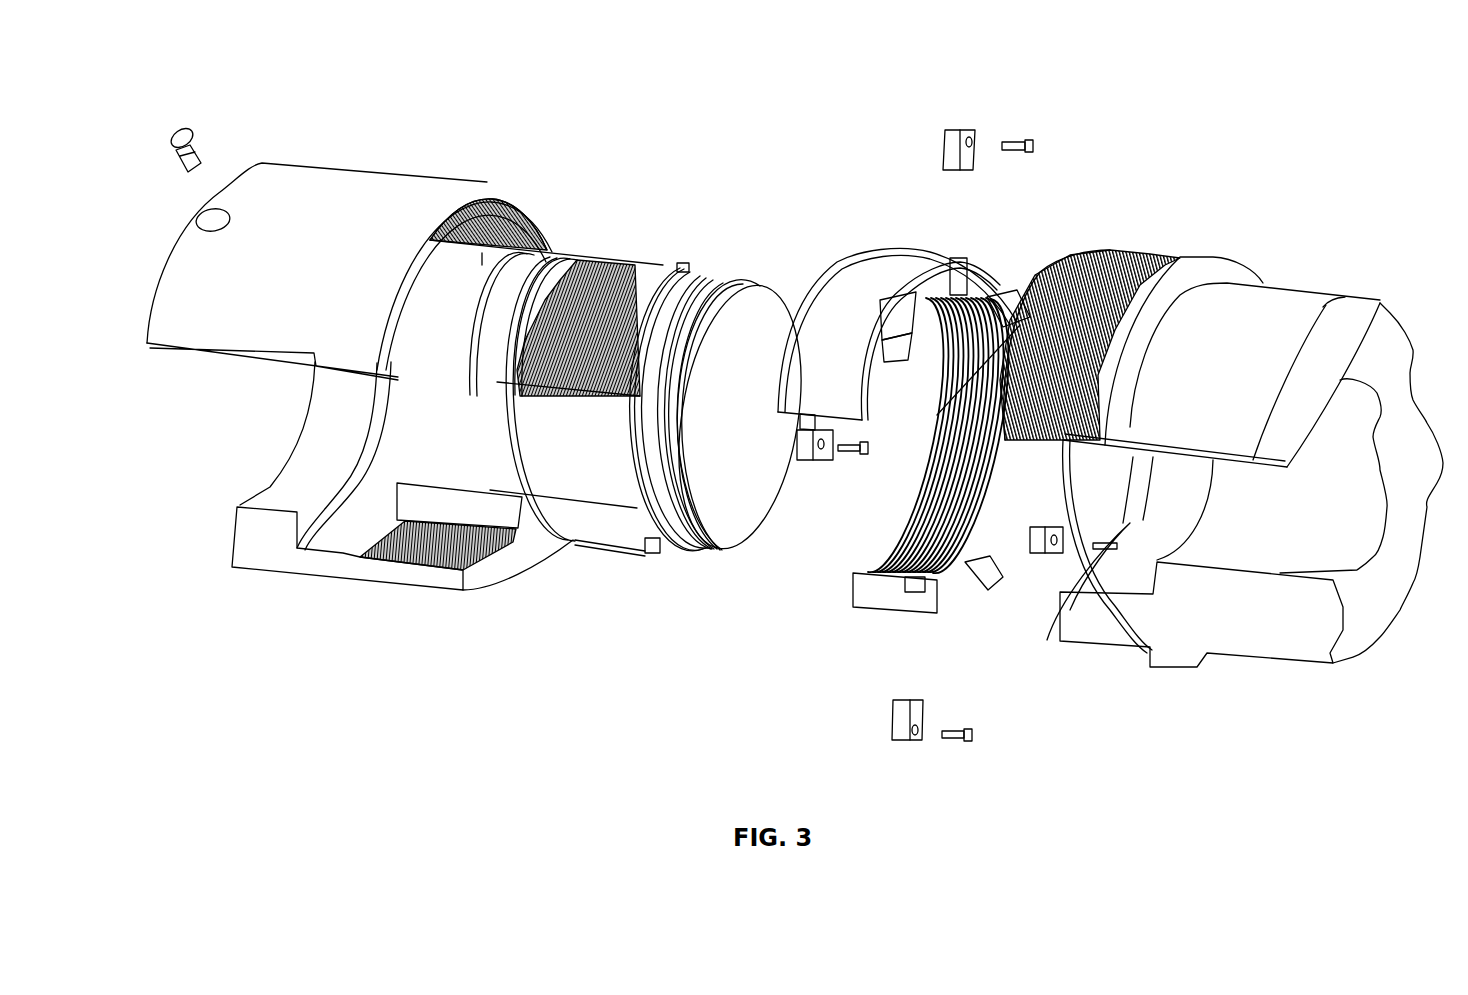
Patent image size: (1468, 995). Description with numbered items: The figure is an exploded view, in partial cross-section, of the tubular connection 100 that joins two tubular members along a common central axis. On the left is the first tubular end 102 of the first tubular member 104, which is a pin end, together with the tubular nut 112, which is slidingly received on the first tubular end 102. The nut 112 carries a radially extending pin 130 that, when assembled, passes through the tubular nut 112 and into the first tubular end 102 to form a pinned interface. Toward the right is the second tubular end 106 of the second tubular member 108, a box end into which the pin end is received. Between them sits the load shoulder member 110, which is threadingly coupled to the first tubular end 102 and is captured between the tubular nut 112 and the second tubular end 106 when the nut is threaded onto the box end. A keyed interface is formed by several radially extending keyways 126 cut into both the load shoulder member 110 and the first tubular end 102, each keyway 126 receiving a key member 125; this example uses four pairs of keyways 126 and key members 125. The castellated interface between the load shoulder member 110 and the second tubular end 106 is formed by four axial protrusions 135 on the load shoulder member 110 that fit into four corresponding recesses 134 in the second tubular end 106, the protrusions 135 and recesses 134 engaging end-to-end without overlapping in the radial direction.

The tubular connection 100 is at (170, 76).
The first tubular end 102 is at (627, 258).
The first tubular member 104 is at (510, 212).
The second tubular end 106 is at (1087, 262).
The second tubular member 108 is at (1285, 293).
The load shoulder member 110 is at (885, 258).
The tubular nut 112 is at (357, 180).
The key member 125 is at (958, 128).
The keyway 126 is at (683, 265).
The pin 130 is at (203, 157).
The recess 134 is at (927, 440).
The axial protrusion 135 is at (900, 310).